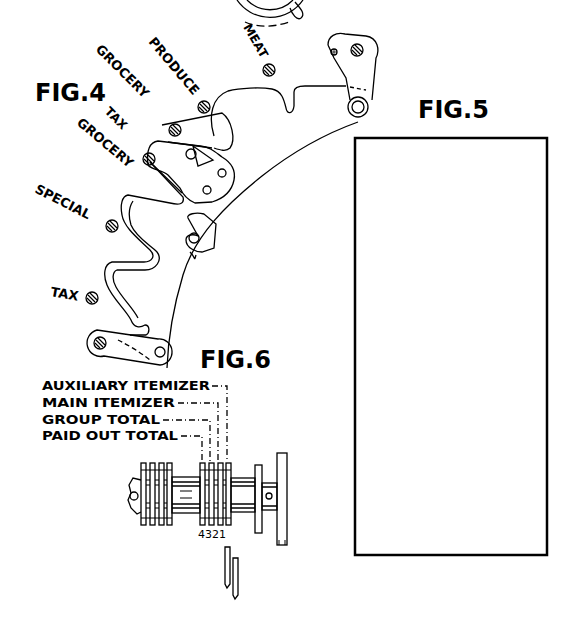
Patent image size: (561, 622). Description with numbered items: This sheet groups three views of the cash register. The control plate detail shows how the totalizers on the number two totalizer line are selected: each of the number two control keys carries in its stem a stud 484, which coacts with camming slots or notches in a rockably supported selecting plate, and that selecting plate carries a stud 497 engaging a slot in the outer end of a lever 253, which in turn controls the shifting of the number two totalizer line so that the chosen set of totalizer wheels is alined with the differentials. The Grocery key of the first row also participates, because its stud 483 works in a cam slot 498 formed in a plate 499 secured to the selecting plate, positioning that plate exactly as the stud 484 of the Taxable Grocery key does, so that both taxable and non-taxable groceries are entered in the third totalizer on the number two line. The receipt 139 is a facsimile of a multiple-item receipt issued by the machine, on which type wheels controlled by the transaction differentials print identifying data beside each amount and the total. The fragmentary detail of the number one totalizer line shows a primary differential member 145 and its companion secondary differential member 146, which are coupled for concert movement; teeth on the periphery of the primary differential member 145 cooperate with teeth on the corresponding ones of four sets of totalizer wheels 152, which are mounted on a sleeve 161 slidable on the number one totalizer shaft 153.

In FIG. 4, the stud 484 is at (263, 72).
In FIG. 4, the stud 483 is at (219, 115).
In FIG. 4, the cam slot 498 is at (221, 149).
In FIG. 4, the plate 499 is at (226, 186).
In FIG. 4, the lever 253 is at (219, 226).
In FIG. 4, the stud 497 is at (196, 254).
In FIG. 5, the receipt 139 is at (373, 228).
In FIG. 6, the #1 totalizer shaft 153 is at (128, 497).
In FIG. 6, the totalizer wheels 152 is at (167, 527).
In FIG. 6, the sleeve 161 is at (236, 522).
In FIG. 6, the primary differential member 145 is at (224, 575).
In FIG. 6, the secondary differential member 146 is at (240, 590).